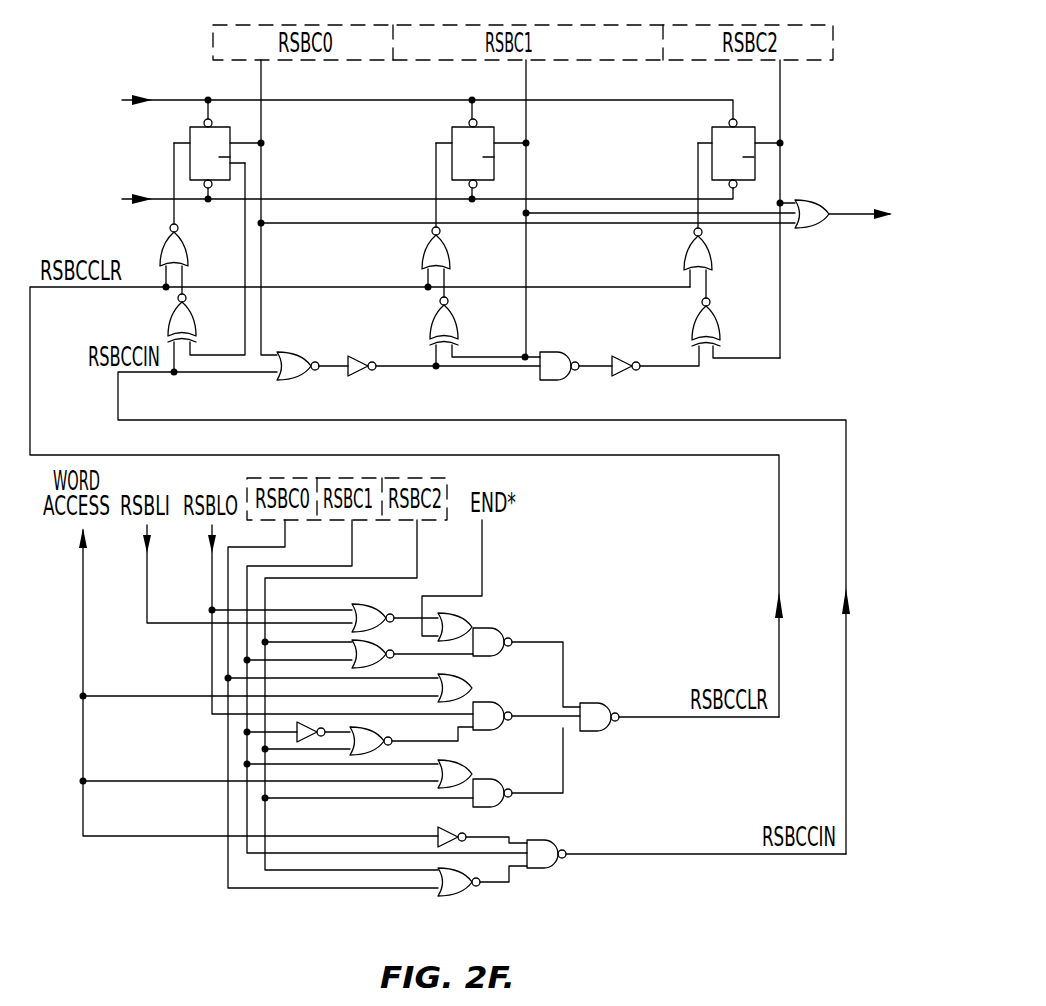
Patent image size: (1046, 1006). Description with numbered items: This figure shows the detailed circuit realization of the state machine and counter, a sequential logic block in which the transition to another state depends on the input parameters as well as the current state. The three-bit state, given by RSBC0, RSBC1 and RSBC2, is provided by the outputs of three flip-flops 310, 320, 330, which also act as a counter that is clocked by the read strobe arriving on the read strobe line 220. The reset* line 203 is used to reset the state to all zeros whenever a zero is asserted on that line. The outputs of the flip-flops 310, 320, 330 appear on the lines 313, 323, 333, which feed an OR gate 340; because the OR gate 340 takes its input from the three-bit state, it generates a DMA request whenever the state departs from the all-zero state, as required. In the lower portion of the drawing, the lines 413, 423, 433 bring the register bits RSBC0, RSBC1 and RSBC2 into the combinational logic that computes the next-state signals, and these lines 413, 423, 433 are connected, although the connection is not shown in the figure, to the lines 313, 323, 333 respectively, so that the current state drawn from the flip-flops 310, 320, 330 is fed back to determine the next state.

The reset* line 203 is at (131, 100).
The read strobe line 220 is at (118, 199).
The flip-flop 310 is at (198, 128).
The flip-flop 320 is at (456, 128).
The flip-flop 330 is at (716, 128).
The OR gate 340 is at (800, 206).
The line 313 is at (261, 82).
The line 323 is at (526, 84).
The line 333 is at (780, 82).
The line 413 is at (285, 547).
The line 423 is at (352, 547).
The line 433 is at (417, 547).